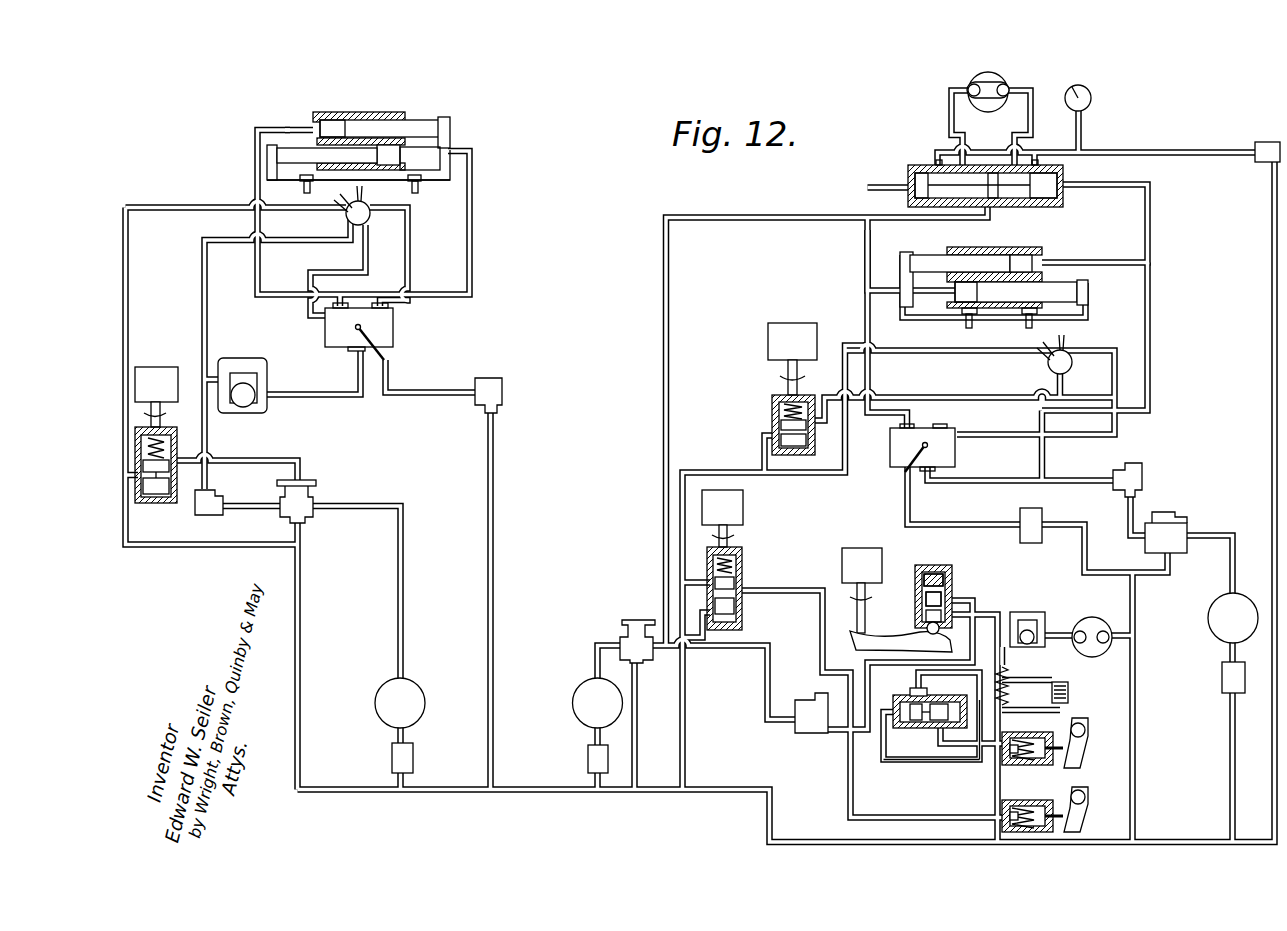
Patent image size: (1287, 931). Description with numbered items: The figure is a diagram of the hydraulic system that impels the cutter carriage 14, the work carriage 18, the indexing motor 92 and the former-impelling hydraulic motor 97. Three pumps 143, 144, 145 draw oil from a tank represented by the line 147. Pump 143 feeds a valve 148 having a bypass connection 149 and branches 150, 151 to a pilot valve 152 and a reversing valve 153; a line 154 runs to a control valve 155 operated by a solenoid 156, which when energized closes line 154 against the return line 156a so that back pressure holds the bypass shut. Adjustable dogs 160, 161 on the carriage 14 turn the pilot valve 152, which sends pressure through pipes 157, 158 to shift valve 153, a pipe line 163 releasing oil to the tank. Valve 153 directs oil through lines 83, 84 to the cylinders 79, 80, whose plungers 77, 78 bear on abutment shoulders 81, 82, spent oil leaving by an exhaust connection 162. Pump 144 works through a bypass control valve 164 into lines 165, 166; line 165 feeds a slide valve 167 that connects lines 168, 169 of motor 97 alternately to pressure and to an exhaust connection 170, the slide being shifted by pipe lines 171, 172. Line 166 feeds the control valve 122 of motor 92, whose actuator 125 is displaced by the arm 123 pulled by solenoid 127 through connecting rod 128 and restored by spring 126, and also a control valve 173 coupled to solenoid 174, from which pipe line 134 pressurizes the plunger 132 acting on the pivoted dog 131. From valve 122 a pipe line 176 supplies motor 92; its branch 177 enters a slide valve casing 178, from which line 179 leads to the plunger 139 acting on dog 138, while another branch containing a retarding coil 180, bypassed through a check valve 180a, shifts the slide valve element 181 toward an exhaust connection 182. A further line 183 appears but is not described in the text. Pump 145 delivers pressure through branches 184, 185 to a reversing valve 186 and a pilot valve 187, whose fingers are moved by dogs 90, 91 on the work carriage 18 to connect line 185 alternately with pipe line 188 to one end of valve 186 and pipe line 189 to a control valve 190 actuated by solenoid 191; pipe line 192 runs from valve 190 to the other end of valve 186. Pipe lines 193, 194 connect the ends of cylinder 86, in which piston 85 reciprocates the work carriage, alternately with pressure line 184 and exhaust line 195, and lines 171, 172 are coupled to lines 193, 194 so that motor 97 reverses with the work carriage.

The cutter carriage 14 is at (382, 180).
The work carriage 18 is at (908, 320).
The plunger 77 is at (420, 122).
The plunger 78 is at (340, 140).
The cylinder 79 is at (328, 120).
The cylinder 80 is at (390, 122).
The abutment shoulder 81 is at (452, 126).
The abutment shoulder 82 is at (266, 153).
The connection 83 is at (282, 127).
The connection 84 is at (472, 196).
The piston 85 is at (972, 262).
The hydraulic cylinder 86 is at (1040, 255).
The adjustable dog 90 is at (964, 326).
The adjustable dog 91 is at (1024, 326).
The indexing motor 92 is at (1094, 616).
The hydraulic motor 97 is at (972, 78).
The control valve 122 is at (937, 566).
The arm 123 is at (908, 625).
The actuator 125 is at (922, 598).
The spring 126 is at (946, 572).
The solenoid 127 is at (855, 560).
The connecting rod 128 is at (856, 608).
The pivoted dog 131 is at (1086, 810).
The plunger 132 is at (1050, 799).
The pipe line 134 is at (822, 656).
The pivoted dog 138 is at (1086, 750).
The plunger 139 is at (1016, 766).
The pump 143 is at (422, 690).
The pump 144 is at (588, 680).
The pump 145 is at (1216, 606).
The line 147 is at (526, 789).
The valve 148 is at (312, 490).
The bypass connection 149 is at (302, 537).
The branch 150 is at (202, 266).
The branch 151 is at (332, 392).
The pilot valve 152 is at (366, 222).
The reversing valve 153 is at (388, 331).
The line 154 is at (258, 458).
The control valve 155 is at (158, 498).
The solenoid 156 is at (156, 372).
The return line 156a is at (265, 532).
The pipe 157 is at (345, 265).
The pipe 158 is at (412, 270).
The adjustable dog 160 is at (306, 192).
The adjustable dog 161 is at (420, 192).
The exhaust connection 162 is at (440, 392).
The pipe line 163 is at (318, 211).
The bypass control valve 164 is at (640, 618).
The pressure line 165 is at (664, 370).
The pressure line 166 is at (735, 658).
The slide valve 167 is at (1030, 202).
The line 168 is at (949, 122).
The line 169 is at (1033, 122).
The exhaust connection 170 is at (1140, 150).
The pipe line 171 is at (866, 258).
The pipe line 172 is at (1150, 214).
The control valve 173 is at (744, 570).
The solenoid 174 is at (744, 512).
The pipe line 176 is at (1010, 612).
The branch 177 is at (937, 696).
The slide valve casing 178 is at (897, 727).
The line 179 is at (972, 768).
The retarding coil 180 is at (1008, 690).
The check valve 180a is at (1070, 692).
The slide valve element 181 is at (912, 690).
The exhaust connection 182 is at (906, 765).
The pipe 183 is at (985, 663).
The pressure line branch 184 is at (993, 483).
The pressure line branch 185 is at (1045, 465).
The reversing valve 186 is at (950, 456).
The pilot valve 187 is at (1048, 368).
The pipe line 188 is at (1112, 370).
The pipe line 189 is at (947, 395).
The control valve 190 is at (778, 426).
The solenoid 191 is at (796, 330).
The pipe line 192 is at (860, 458).
The pipe line 193 is at (870, 377).
The pipe line 194 is at (1150, 342).
The exhaust line 195 is at (904, 488).